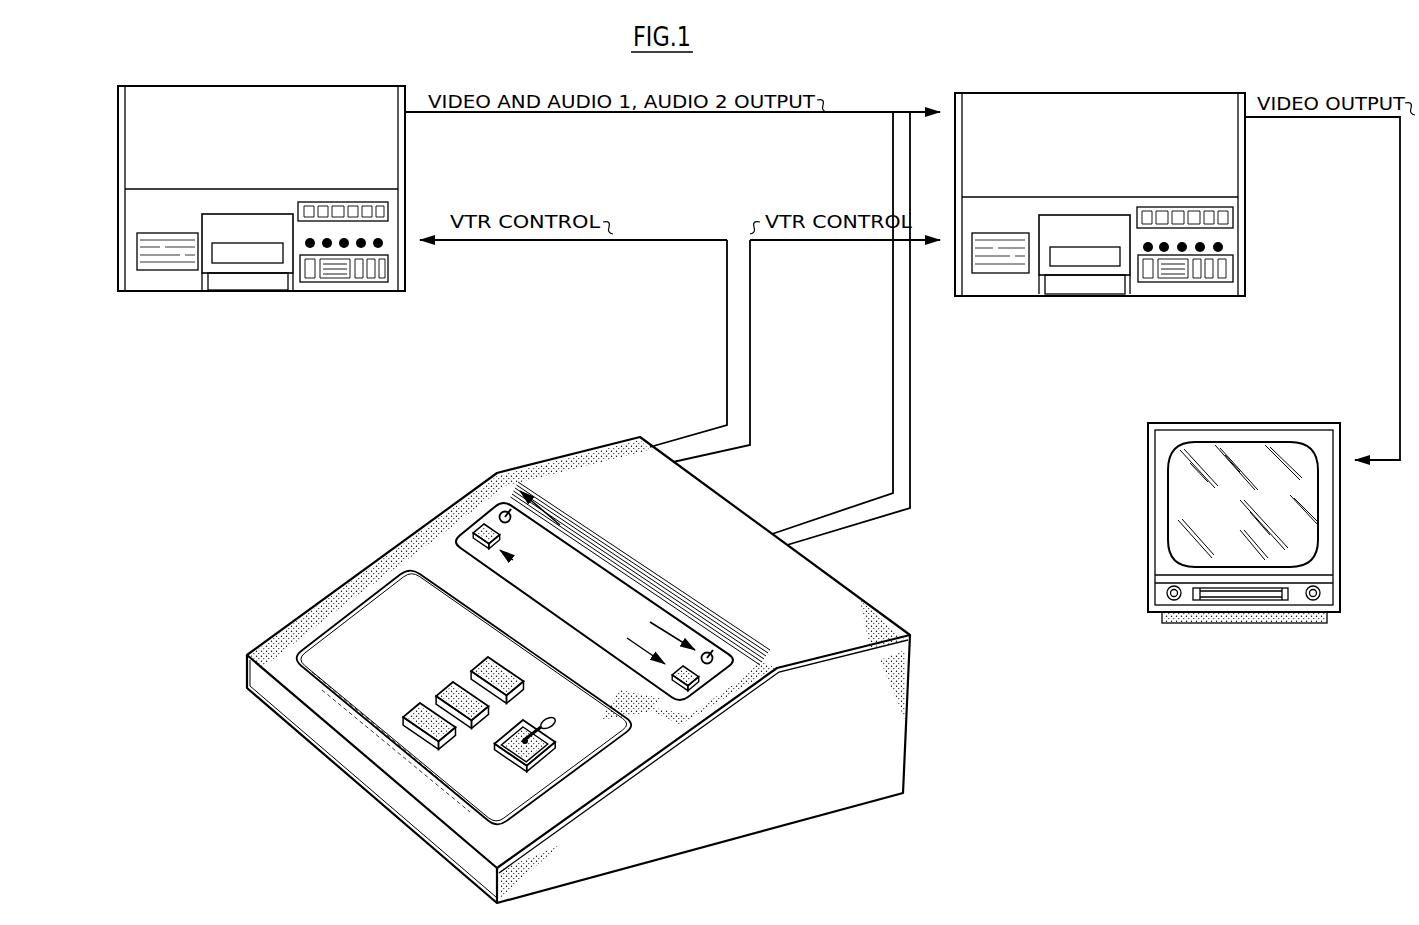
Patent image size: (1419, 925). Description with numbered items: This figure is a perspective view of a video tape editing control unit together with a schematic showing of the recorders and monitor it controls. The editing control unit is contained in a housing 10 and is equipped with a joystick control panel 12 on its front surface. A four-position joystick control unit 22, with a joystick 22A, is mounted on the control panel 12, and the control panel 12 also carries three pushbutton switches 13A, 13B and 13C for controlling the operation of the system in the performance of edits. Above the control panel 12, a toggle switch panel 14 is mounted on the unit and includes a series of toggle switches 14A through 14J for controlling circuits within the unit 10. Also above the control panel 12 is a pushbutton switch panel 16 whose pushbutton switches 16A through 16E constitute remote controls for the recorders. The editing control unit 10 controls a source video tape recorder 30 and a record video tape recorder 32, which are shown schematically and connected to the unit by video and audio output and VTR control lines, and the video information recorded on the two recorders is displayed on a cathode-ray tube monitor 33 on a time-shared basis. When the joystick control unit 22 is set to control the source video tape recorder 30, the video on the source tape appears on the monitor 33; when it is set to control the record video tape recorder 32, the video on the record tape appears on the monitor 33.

The housing 10 is at (801, 805).
The joystick control panel 12 is at (495, 784).
The pushbutton switch 13A is at (489, 664).
The pushbutton switch 13B is at (453, 683).
The pushbutton switch 13C is at (422, 712).
The toggle switch panel 14 is at (668, 634).
The toggle switch 14A is at (506, 510).
The toggle switch 14J is at (714, 655).
The pushbutton switch panel 16 is at (645, 695).
The pushbutton switch 16A is at (470, 530).
The pushbutton switch 16E is at (700, 684).
The four-position joystick control unit 22 is at (547, 751).
The joystick 22A is at (556, 722).
The source video tape recorder 30 is at (140, 181).
The record video tape recorder 32 is at (1213, 178).
The cathode-ray tube monitor 33 is at (1200, 507).